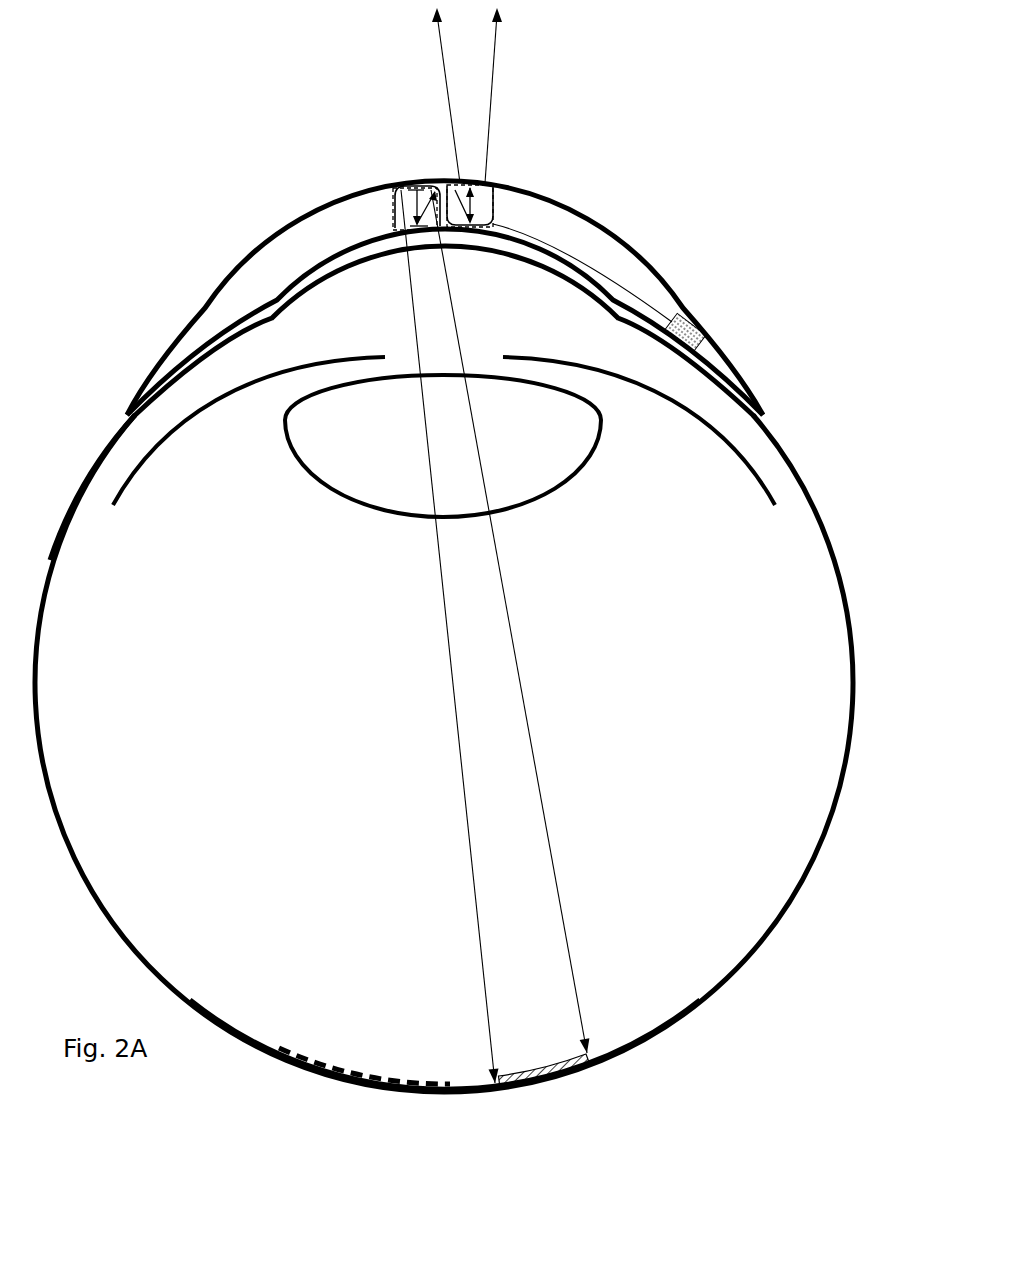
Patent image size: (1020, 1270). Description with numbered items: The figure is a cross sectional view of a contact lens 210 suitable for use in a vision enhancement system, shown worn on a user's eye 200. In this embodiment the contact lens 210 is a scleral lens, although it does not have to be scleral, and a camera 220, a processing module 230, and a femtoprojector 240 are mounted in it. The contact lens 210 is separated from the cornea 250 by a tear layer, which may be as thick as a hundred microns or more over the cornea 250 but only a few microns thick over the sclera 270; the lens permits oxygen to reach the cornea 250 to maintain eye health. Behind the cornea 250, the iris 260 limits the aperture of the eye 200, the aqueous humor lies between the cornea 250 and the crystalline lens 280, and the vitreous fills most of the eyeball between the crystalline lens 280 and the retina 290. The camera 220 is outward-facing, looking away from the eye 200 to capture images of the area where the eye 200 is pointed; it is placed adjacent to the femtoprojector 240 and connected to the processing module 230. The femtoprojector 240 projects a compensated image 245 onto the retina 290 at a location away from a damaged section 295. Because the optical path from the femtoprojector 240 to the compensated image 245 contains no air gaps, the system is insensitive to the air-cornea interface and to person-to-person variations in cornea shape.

The eye 200 is at (444, 753).
The contact lens 210 is at (445, 298).
The camera 220 is at (490, 182).
The processing module 230 is at (700, 345).
The femtoprojector 240 is at (390, 187).
The compensated image 245 is at (563, 1060).
The cornea 250 is at (444, 331).
The iris 260 is at (590, 352).
The sclera 270 is at (135, 460).
The crystalline lens 280 is at (443, 446).
The retina 290 is at (183, 992).
The damaged section 295 is at (290, 1052).